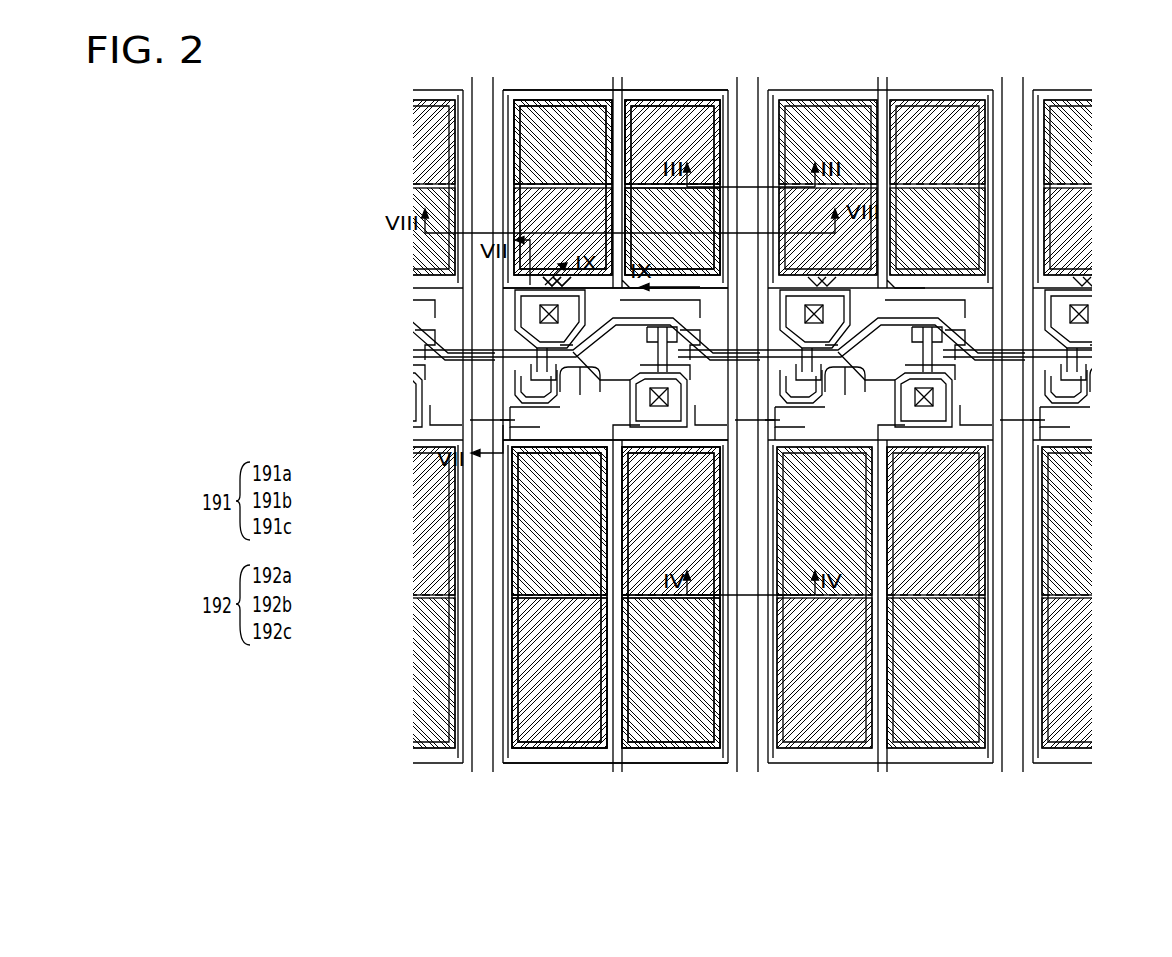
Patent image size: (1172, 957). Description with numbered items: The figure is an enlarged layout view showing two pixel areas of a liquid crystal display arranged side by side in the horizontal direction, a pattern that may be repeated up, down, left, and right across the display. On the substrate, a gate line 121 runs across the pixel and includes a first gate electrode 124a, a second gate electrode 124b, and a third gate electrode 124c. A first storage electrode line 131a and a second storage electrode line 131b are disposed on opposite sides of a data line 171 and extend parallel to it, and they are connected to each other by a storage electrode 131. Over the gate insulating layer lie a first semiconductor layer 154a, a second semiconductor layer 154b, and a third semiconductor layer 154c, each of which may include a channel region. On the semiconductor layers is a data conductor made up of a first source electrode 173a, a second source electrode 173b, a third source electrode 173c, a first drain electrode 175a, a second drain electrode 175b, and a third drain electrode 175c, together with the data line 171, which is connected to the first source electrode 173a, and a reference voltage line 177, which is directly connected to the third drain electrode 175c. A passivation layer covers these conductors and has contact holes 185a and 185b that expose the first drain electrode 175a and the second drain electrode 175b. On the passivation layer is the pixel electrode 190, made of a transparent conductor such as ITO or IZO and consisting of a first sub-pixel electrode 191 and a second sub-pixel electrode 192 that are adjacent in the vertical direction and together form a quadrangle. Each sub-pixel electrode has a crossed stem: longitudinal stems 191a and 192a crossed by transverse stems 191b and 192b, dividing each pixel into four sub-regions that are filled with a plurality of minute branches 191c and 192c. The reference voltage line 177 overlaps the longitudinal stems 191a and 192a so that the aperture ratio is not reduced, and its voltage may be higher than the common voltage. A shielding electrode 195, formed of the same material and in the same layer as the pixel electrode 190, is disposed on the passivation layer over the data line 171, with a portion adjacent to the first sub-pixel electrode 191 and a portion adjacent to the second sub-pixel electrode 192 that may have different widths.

The gate line 121 is at (546, 358).
The first gate electrode 124a is at (512, 422).
The second gate electrode 124b is at (580, 410).
The third gate electrode 124c is at (682, 303).
The storage electrode 131 is at (668, 89).
The first storage electrode line 131a is at (500, 121).
The second storage electrode line 131b is at (710, 115).
The first semiconductor layer 154a is at (535, 372).
The second semiconductor layer 154b is at (655, 428).
The third semiconductor layer 154c is at (653, 326).
The data line 171 is at (760, 115).
The first source electrode 173a is at (522, 395).
The second source electrode 173b is at (572, 352).
The third source electrode 173c is at (666, 368).
The first drain electrode 175a is at (540, 349).
The second drain electrode 175b is at (598, 396).
The third drain electrode 175c is at (680, 332).
The reference voltage line 177 is at (607, 120).
The contact hole 185a is at (540, 312).
The contact hole 185b is at (658, 410).
The pixel electrode 190 is at (250, 393).
The first sub-pixel electrode 191 is at (515, 153).
The longitudinal stem 191a is at (612, 125).
The transverse stem 191b is at (565, 167).
The minute branches 191c is at (552, 224).
The second sub-pixel electrode 192 is at (503, 657).
The longitudinal stem 192a is at (622, 712).
The transverse stem 192b is at (547, 603).
The minute branches 192c is at (558, 712).
The shielding electrode 195 is at (770, 148).